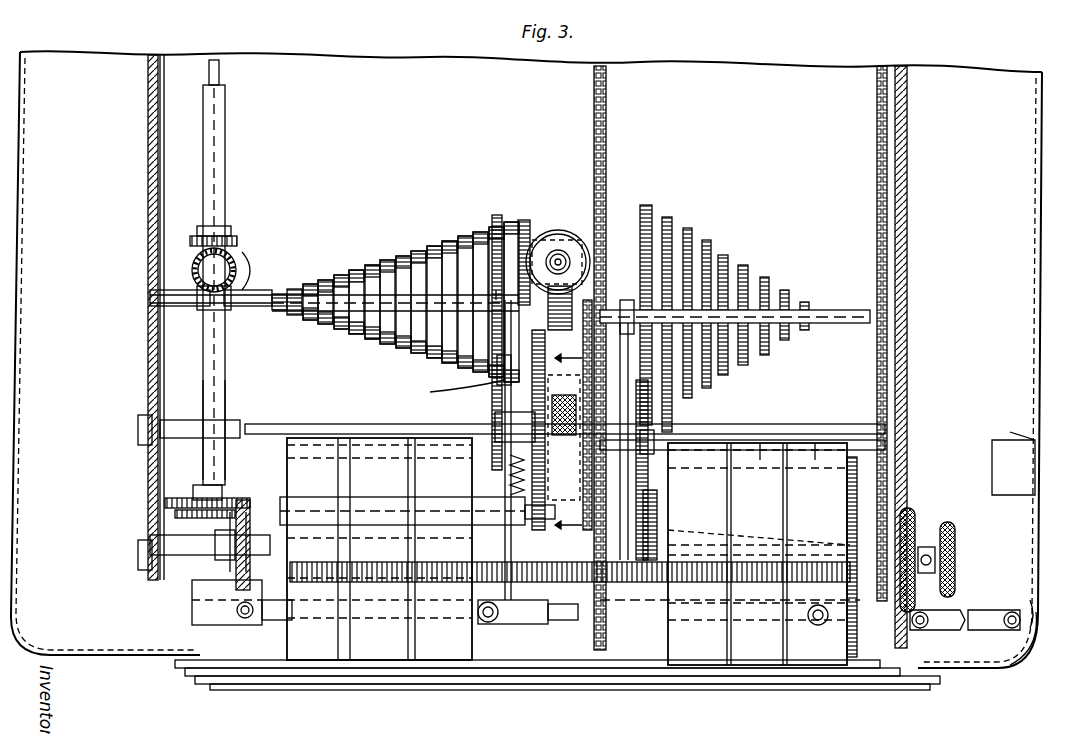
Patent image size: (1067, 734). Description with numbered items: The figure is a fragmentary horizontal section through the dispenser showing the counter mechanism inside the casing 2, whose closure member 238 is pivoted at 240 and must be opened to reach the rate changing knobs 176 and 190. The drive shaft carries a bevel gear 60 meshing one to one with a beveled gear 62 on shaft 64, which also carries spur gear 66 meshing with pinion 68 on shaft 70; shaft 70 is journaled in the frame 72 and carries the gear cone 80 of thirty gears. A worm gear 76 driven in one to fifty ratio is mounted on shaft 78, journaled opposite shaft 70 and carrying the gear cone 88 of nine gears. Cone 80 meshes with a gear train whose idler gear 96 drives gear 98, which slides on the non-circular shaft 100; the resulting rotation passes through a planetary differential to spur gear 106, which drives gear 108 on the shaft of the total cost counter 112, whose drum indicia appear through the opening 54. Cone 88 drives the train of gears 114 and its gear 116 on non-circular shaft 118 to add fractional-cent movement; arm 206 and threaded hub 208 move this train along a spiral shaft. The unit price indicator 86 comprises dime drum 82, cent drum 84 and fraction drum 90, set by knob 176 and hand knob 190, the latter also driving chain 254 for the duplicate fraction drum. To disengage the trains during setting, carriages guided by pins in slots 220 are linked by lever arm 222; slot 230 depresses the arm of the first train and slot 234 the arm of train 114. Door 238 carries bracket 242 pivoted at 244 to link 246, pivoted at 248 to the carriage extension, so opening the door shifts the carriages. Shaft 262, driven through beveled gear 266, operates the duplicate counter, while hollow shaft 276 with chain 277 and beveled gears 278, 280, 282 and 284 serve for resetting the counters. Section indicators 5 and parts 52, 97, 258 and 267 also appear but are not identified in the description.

The casing 2 is at (1036, 342).
The section line 5 is at (585, 441).
The base plate 52 is at (745, 690).
The opening 54 is at (356, 682).
The bevel gear 60 is at (560, 236).
The beveled gear 62 is at (526, 232).
The shaft 64 is at (538, 262).
The spur gear 66 is at (510, 240).
The pinion 68 is at (512, 377).
The shaft 70 is at (250, 292).
The frame 72 is at (150, 208).
The worm gear 76 is at (602, 282).
The shaft 78 is at (822, 310).
The gear cone 80 is at (322, 292).
The dime drum 82 is at (712, 452).
The cent drum 84 is at (786, 440).
The unit price indicator 86 is at (832, 667).
The gear cone 88 is at (722, 256).
The fraction drum 90 is at (856, 466).
The idler gear 96 is at (451, 390).
The pin 97 is at (498, 296).
The gear 98 is at (505, 475).
The non-circular shaft 100 is at (346, 428).
The spur gear 106 is at (500, 426).
The gear 108 is at (546, 616).
The total cost counter 112 is at (312, 662).
The train of gears 114 is at (672, 416).
The gear 116 is at (648, 519).
The non-circular shaft 118 is at (818, 444).
The knob 176 is at (950, 524).
The hand knob 190 is at (910, 508).
The arm 206 is at (672, 506).
The hub 208 is at (700, 560).
The slot 220 is at (275, 616).
The lever arm 222 is at (582, 618).
The slot 230 is at (246, 616).
The slot 234 is at (790, 598).
The closure member 238 is at (1036, 530).
The pivot 240 is at (1032, 655).
The bracket 242 is at (1017, 600).
The pivot 244 is at (1006, 628).
The link 246 is at (980, 614).
The pivot 248 is at (920, 630).
The chain 254 is at (886, 368).
The chain 258 is at (606, 158).
The shaft 262 is at (192, 272).
The beveled gear 266 is at (232, 576).
The shaft 267 is at (146, 498).
The hollow shaft 276 is at (228, 168).
The chain 277 is at (224, 382).
The beveled gear 278 is at (232, 496).
The beveled gear 280 is at (256, 510).
The beveled gear 282 is at (226, 308).
The beveled gear 284 is at (226, 262).